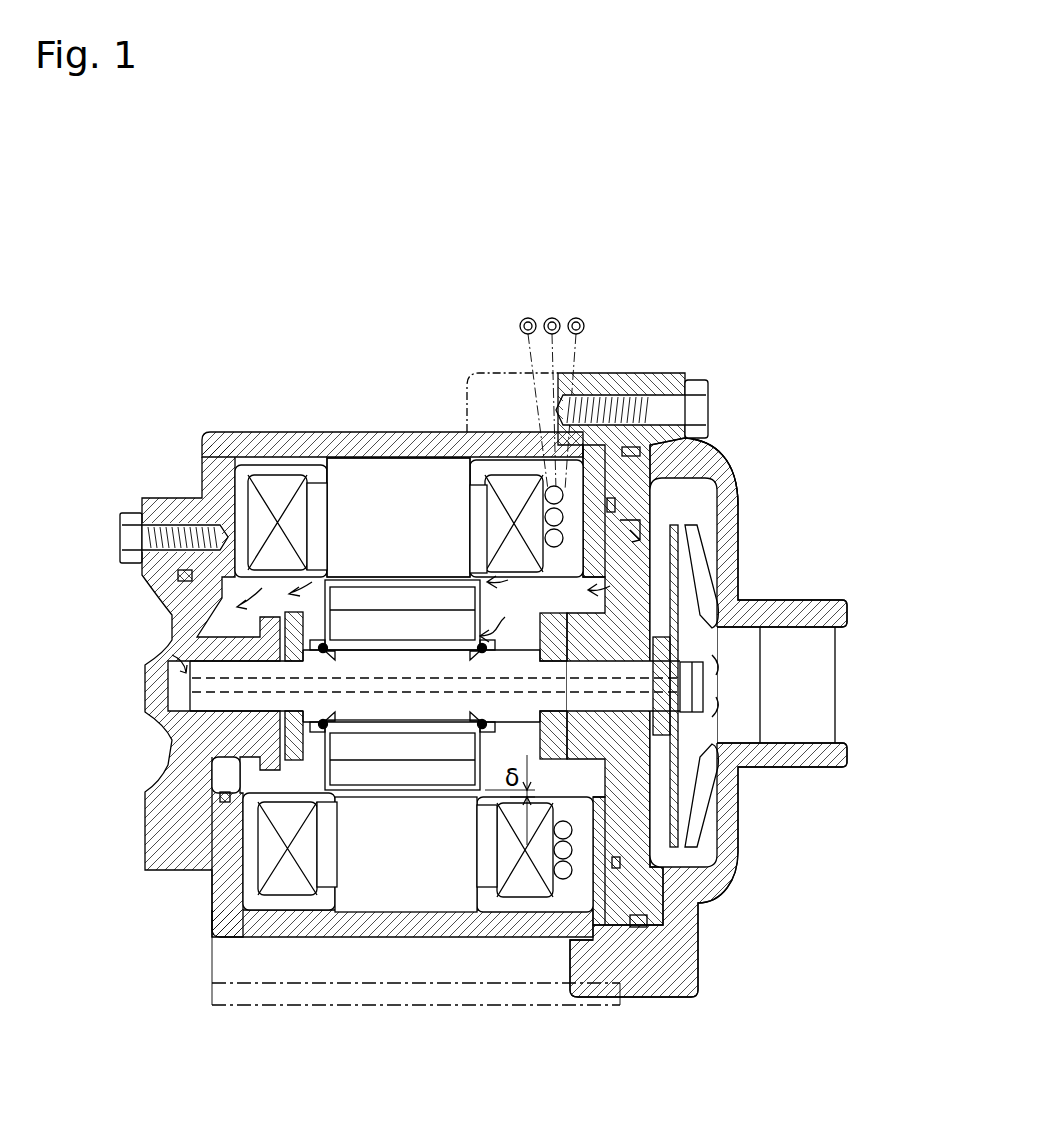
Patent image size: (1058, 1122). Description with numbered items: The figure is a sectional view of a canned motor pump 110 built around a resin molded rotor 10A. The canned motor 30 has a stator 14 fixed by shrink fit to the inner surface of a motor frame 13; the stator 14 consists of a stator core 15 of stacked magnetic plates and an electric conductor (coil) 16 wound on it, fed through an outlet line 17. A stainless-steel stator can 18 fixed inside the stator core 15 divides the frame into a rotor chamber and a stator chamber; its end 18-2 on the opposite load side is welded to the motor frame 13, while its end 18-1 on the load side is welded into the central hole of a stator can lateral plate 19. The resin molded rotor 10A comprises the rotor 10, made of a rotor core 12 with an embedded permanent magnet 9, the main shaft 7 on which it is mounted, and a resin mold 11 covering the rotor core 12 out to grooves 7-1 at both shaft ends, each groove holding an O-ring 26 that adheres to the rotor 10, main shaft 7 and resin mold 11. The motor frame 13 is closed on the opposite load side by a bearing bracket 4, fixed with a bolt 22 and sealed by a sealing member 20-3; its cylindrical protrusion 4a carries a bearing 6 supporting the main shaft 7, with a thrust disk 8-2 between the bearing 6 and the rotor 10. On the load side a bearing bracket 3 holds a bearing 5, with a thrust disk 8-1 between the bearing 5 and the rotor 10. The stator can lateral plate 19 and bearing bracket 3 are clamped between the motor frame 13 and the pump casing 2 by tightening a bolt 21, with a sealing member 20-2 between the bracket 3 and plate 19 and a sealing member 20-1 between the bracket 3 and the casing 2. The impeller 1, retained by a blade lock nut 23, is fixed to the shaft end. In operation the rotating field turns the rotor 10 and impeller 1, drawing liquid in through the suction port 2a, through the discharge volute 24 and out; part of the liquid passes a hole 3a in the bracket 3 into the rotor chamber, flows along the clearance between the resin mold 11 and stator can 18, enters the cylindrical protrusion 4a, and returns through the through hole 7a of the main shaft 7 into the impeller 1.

The impeller 1 is at (705, 577).
The pump casing 2 is at (740, 522).
The suction port 2a is at (822, 653).
The bearing bracket 3 is at (647, 798).
The hole 3a is at (640, 515).
The bearing bracket 4 is at (137, 595).
The cylindrical protrusion 4a is at (213, 777).
The bearing 5 is at (622, 640).
The bearing 6 is at (213, 598).
The main shaft 7 is at (430, 708).
The groove 7-1 is at (498, 690).
The through hole 7a is at (185, 712).
The thrust disk 8-1 is at (575, 735).
The thrust disk 8-2 is at (296, 625).
The permanent magnet 9 is at (390, 772).
The rotor 10 is at (395, 582).
The resin molded rotor 10A is at (362, 348).
The resin mold 11 is at (362, 787).
The rotor core 12 is at (453, 750).
The motor frame 13 is at (362, 442).
The stator 14 is at (432, 456).
The stator core 15 is at (355, 485).
The electric conductor (coil) 16 is at (272, 490).
The outlet line 17 is at (583, 360).
The stator can 18 is at (628, 798).
The end 18-1 is at (607, 800).
The end 18-2 is at (222, 795).
The stator can lateral plate 19 is at (593, 470).
The sealing member 20-1 is at (645, 927).
The sealing member 20-2 is at (620, 864).
The sealing member 20-3 is at (180, 578).
The bolt 21 is at (700, 392).
The bolt 22 is at (128, 520).
The blade lock nut 23 is at (693, 664).
The discharge volute 24 is at (655, 470).
The O-ring 26 is at (423, 609).
The canned motor 30 is at (222, 348).
The canned motor pump 110 is at (722, 332).